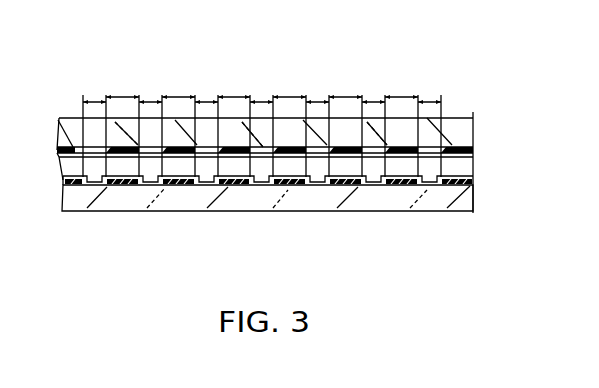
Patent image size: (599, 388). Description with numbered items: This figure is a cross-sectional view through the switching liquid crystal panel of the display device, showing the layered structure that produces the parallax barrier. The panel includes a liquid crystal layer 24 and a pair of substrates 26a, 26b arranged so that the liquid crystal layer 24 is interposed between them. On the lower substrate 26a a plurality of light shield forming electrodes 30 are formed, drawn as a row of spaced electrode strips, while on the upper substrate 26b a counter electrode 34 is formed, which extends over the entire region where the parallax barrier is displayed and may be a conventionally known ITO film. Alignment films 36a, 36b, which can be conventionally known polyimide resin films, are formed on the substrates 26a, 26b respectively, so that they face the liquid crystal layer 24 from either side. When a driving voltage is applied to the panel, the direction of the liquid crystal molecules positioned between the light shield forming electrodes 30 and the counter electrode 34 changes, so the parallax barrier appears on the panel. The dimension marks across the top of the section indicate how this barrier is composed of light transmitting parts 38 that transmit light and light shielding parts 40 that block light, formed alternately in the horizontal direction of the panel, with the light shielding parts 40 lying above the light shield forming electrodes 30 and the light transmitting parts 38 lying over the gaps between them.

The liquid crystal layer 24 is at (462, 165).
The substrate 26a is at (74, 198).
The substrate 26b is at (460, 135).
The light shield forming electrode 30 is at (65, 183).
The counter electrode 34 is at (59, 118).
The alignment film 36a is at (470, 177).
The alignment film 36b is at (58, 151).
The light transmitting part 38 is at (90, 101).
The light shielding part 40 is at (119, 96).